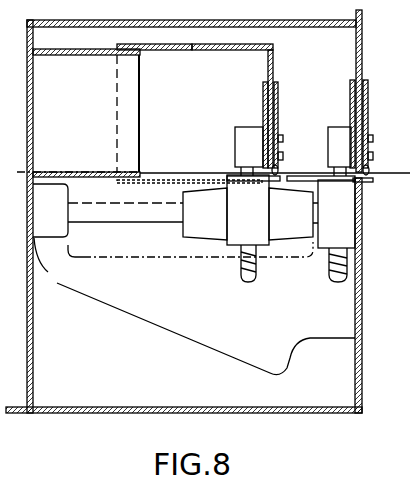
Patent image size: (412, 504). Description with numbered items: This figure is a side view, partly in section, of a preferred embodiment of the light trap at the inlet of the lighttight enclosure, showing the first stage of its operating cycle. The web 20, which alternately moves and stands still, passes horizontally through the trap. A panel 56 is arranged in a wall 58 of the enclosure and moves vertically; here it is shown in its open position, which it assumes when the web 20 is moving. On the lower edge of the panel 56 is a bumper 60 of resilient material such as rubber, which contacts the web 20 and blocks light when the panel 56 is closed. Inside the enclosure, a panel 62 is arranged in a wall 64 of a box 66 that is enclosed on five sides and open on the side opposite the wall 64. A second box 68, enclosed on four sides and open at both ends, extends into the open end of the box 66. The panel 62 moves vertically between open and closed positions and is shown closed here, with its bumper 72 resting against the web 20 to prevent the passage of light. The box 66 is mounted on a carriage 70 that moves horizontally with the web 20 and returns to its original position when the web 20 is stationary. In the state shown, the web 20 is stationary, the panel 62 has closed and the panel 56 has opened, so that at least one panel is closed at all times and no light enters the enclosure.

The web 20 is at (384, 177).
The panel 56 is at (368, 110).
The wall 58 is at (362, 53).
The bumper 60 is at (370, 171).
The panel 62 is at (278, 110).
The wall 64 is at (274, 69).
The box 66 is at (235, 53).
The box 68 is at (88, 58).
The carriage 70 is at (237, 222).
The bumper 72 is at (278, 171).